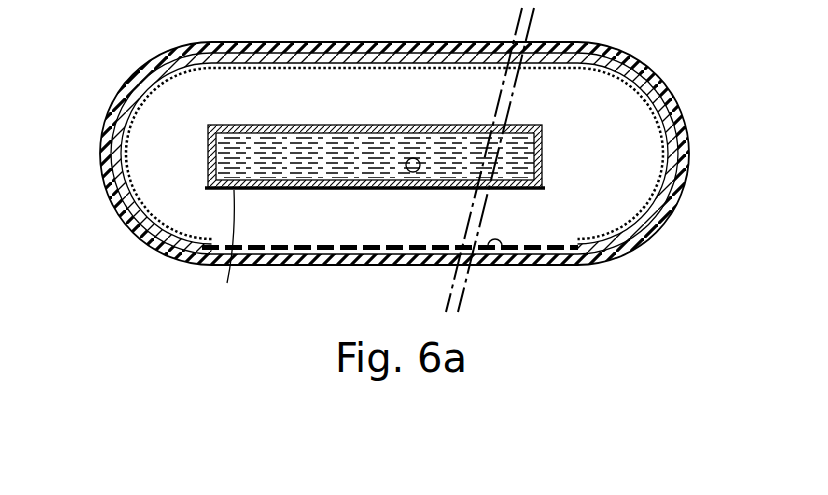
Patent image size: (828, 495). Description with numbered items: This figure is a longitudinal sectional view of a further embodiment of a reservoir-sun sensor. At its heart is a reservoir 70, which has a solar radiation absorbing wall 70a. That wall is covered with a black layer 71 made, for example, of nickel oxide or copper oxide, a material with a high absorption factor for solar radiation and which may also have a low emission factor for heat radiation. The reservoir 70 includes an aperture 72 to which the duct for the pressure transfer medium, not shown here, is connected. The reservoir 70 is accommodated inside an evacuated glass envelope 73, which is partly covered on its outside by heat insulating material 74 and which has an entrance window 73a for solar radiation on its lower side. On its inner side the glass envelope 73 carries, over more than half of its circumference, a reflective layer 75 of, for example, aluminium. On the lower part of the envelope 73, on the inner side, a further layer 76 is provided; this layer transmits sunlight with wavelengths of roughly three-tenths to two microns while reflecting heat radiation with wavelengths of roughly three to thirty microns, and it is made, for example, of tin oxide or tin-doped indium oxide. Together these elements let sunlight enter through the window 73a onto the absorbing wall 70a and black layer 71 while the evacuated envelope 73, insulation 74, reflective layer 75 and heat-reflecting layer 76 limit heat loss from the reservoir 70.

The reservoir 70 is at (375, 155).
The solar radiation absorbing wall 70a is at (300, 190).
The black layer 71 is at (227, 283).
The aperture 72 is at (407, 172).
The evacuated glass envelope 73 is at (422, 62).
The entrance window 73a is at (380, 257).
The heat insulating material 74 is at (487, 51).
The reflective layer 75 is at (238, 63).
The layer transmitting sun light but reflecting heat radiation 76 is at (501, 265).